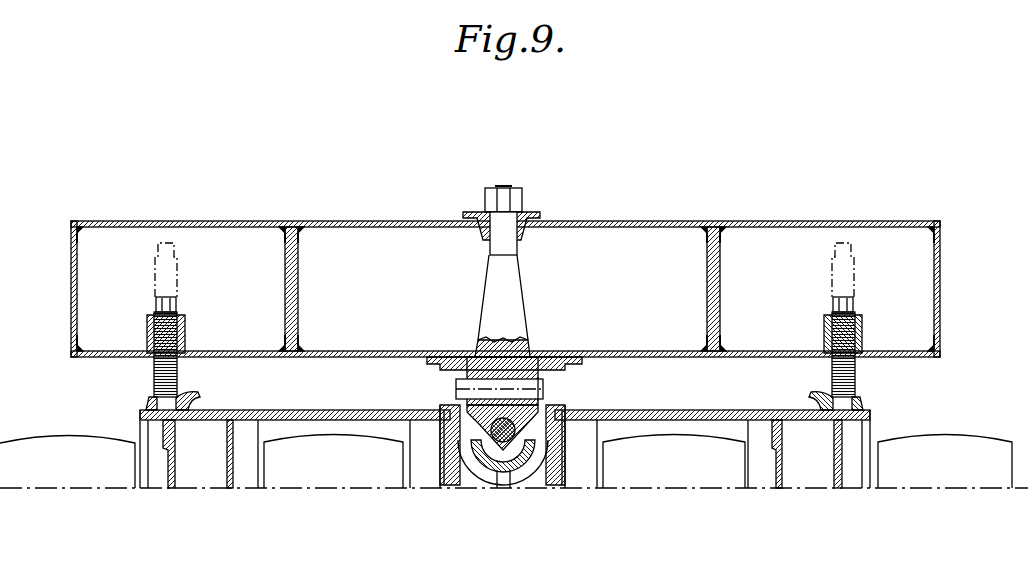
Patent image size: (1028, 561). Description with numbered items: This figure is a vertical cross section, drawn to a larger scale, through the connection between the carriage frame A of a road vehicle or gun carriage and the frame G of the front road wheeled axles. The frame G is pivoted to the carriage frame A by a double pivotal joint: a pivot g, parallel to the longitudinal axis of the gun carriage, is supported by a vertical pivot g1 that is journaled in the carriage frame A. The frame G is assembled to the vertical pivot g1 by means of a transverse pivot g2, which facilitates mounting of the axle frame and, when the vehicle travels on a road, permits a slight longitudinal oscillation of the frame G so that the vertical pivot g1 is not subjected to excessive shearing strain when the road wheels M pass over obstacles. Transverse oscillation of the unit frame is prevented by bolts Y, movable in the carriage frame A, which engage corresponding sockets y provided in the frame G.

The carriage frame A is at (636, 230).
The vertical pivot g1 is at (512, 288).
The transverse pivot g2 is at (456, 390).
The pivot g is at (520, 460).
The frame of the front road wheeled axles G is at (330, 410).
The road wheels M is at (46, 445).
The bolts Y is at (155, 373).
The sockets y is at (150, 401).